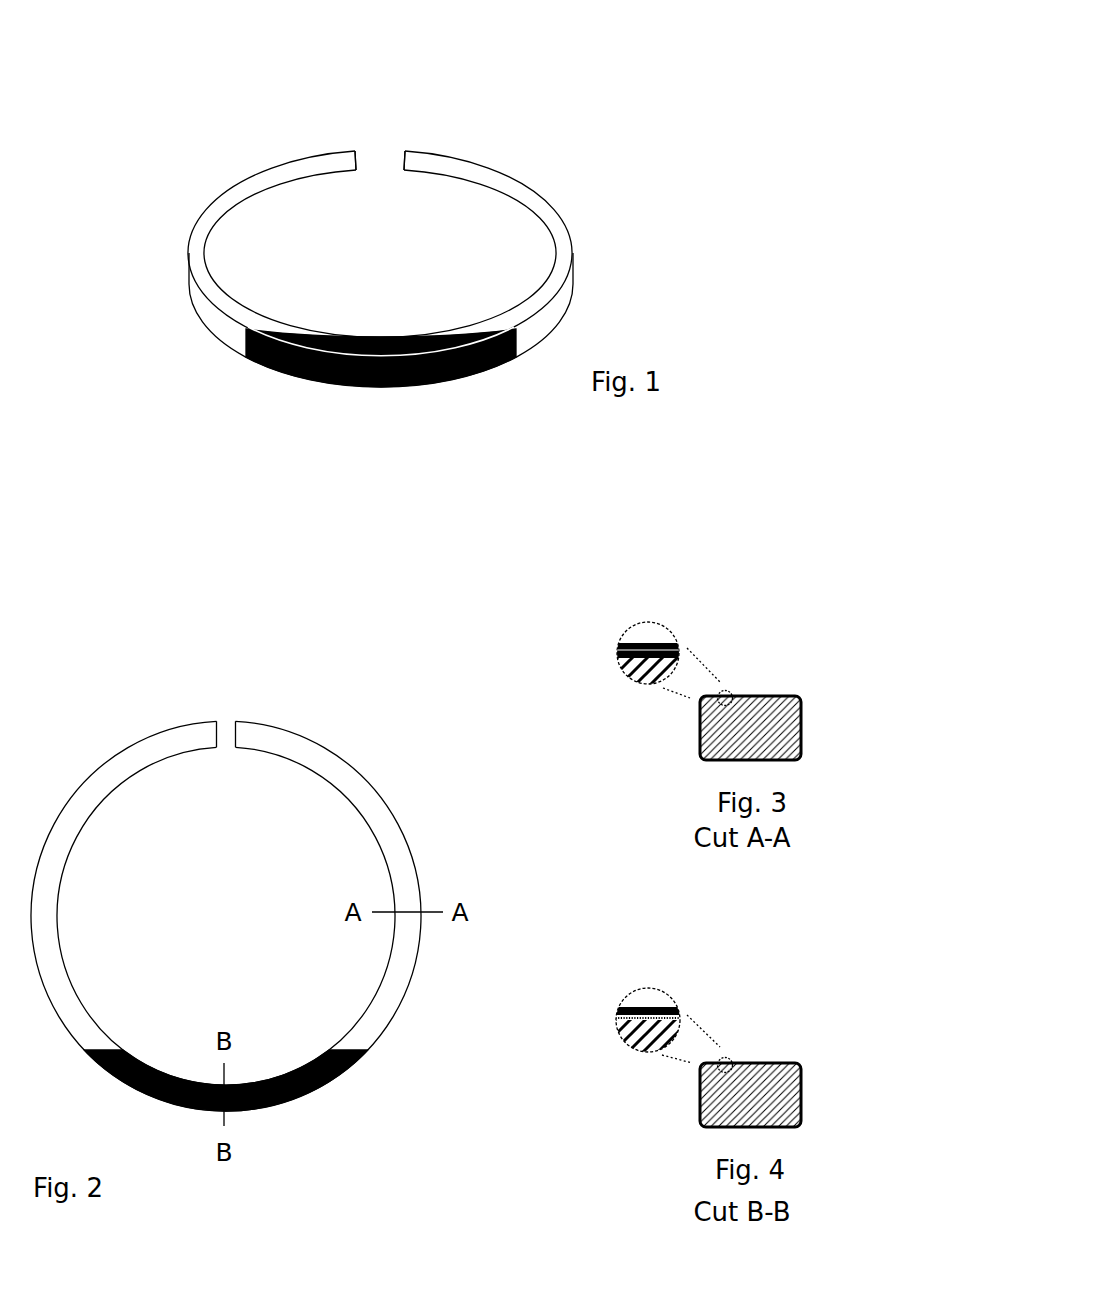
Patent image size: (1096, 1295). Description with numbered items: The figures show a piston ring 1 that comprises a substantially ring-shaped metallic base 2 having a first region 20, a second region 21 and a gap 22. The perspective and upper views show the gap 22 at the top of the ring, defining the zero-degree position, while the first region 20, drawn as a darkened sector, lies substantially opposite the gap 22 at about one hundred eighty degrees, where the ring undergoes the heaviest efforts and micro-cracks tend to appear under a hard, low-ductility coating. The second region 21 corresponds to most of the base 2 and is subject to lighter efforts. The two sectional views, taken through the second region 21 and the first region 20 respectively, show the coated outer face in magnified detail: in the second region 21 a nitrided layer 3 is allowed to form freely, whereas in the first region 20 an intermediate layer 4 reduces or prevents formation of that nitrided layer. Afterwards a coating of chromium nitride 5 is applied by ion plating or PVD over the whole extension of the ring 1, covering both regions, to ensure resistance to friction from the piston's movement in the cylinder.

In FIG. 1, the piston ring 1 is at (339, 240).
In FIG. 1, the metallic base 2 is at (204, 323).
In FIG. 2, the metallic base 2 is at (108, 759).
In FIG. 3, the nitrided layer 3 is at (620, 653).
In FIG. 4, the intermediate layer 4 is at (677, 1015).
In FIG. 3, the coating of chromium nitride 5 is at (635, 645).
In FIG. 4, the coating of chromium nitride 5 is at (632, 1010).
In FIG. 1, the first region 20 is at (463, 362).
In FIG. 2, the first region 20 is at (320, 1066).
In FIG. 4, the first region 20 is at (782, 1088).
In FIG. 1, the second region 21 is at (202, 270).
In FIG. 2, the second region 21 is at (383, 1002).
In FIG. 3, the second region 21 is at (782, 720).
In FIG. 1, the gap 22 is at (379, 155).
In FIG. 2, the gap 22 is at (226, 719).